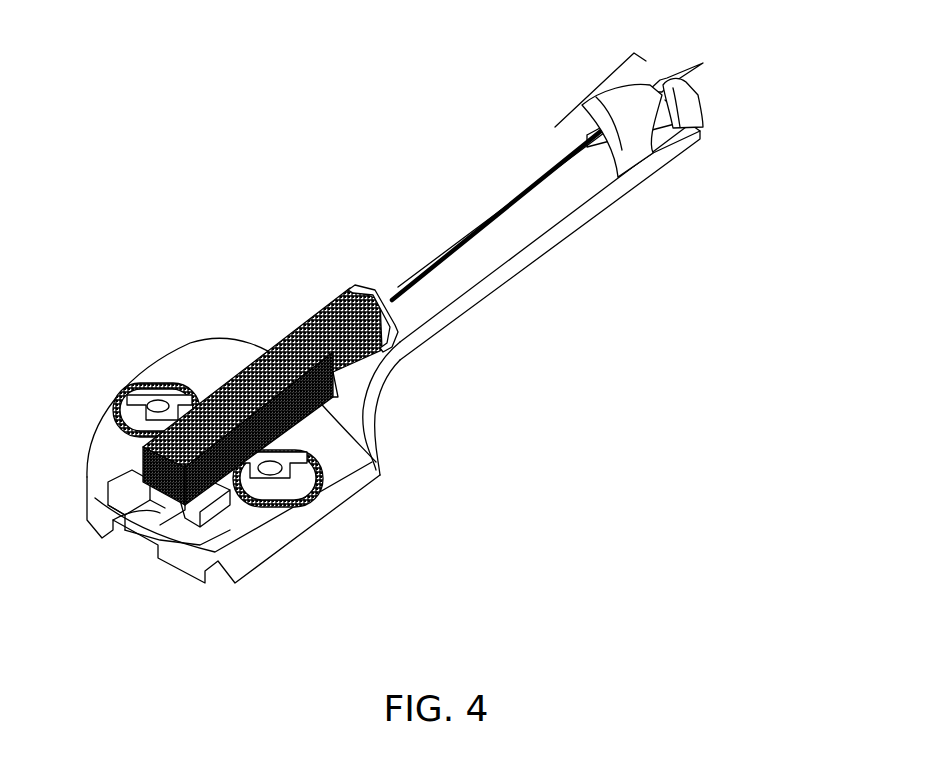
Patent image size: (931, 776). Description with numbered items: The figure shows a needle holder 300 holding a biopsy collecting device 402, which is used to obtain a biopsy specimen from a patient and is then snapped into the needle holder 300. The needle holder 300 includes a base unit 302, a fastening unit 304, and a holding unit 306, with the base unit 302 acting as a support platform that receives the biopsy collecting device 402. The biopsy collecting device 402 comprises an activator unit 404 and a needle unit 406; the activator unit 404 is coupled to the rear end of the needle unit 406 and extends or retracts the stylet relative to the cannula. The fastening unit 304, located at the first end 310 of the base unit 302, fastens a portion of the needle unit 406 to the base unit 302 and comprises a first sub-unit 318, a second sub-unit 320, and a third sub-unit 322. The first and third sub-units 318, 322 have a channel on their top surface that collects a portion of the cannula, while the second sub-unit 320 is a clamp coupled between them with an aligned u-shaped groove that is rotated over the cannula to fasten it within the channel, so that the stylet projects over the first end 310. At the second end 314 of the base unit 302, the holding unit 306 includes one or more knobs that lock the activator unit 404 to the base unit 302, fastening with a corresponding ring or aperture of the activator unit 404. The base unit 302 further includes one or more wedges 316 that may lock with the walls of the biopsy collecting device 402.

The needle holder 300 is at (418, 325).
The base unit 302 is at (548, 210).
The fastening unit 304 is at (660, 118).
The holding unit 306 is at (137, 395).
The first end 310 is at (716, 156).
The second end 314 is at (262, 586).
The wedges 316 is at (123, 462).
The first sub-unit 318 is at (626, 148).
The second sub-unit 320 is at (612, 98).
The third sub-unit 322 is at (684, 112).
The biopsy collecting device 402 is at (358, 285).
The activator unit 404 is at (246, 368).
The needle unit 406 is at (487, 222).